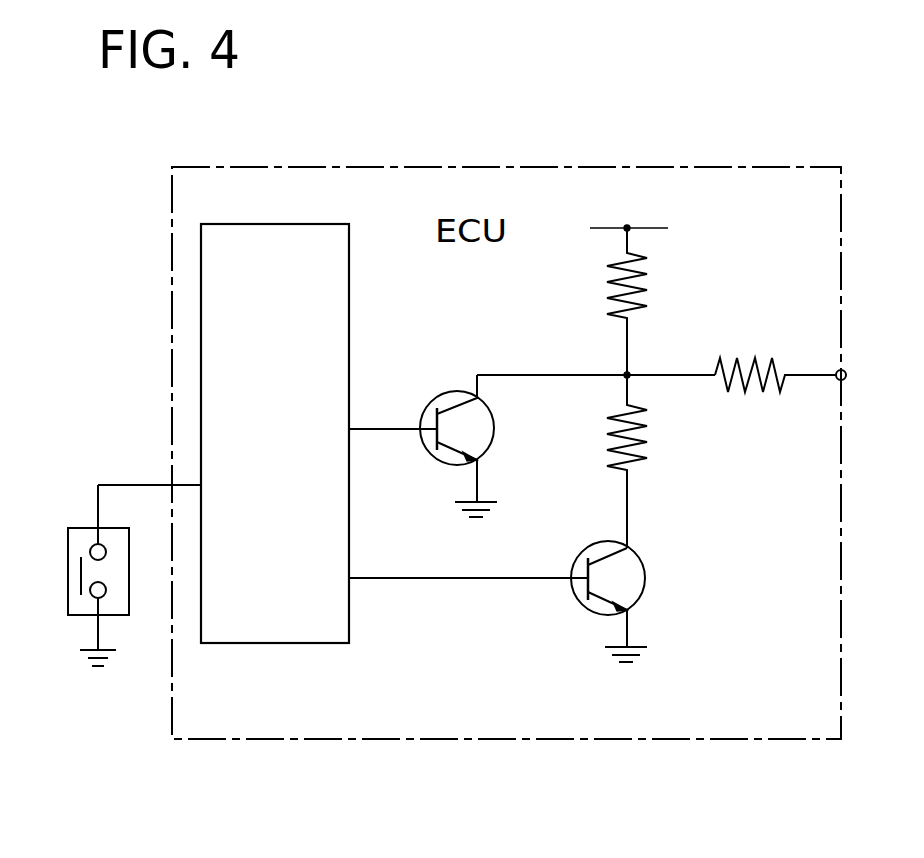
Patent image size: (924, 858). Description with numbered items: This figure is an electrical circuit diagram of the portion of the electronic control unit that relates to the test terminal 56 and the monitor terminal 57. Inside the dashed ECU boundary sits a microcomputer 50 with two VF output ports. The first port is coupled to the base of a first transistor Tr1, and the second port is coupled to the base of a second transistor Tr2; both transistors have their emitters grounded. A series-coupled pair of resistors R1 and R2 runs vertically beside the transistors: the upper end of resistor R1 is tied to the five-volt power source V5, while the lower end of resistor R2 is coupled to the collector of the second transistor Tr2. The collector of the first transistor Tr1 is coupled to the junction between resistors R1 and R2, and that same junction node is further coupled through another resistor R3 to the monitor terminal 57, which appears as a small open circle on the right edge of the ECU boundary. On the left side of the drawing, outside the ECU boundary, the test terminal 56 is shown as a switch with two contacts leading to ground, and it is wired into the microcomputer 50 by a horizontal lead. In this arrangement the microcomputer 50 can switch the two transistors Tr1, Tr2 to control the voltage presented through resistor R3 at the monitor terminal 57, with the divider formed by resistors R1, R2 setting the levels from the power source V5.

The microcomputer 50 is at (350, 312).
The test terminal 56 is at (68, 558).
The monitor terminal 57 is at (845, 379).
The resistor R1 is at (636, 266).
The resistor R2 is at (640, 434).
The resistor R3 is at (745, 365).
The first transistor Tr1 is at (492, 425).
The second transistor Tr2 is at (645, 585).
The power source V5 is at (645, 226).